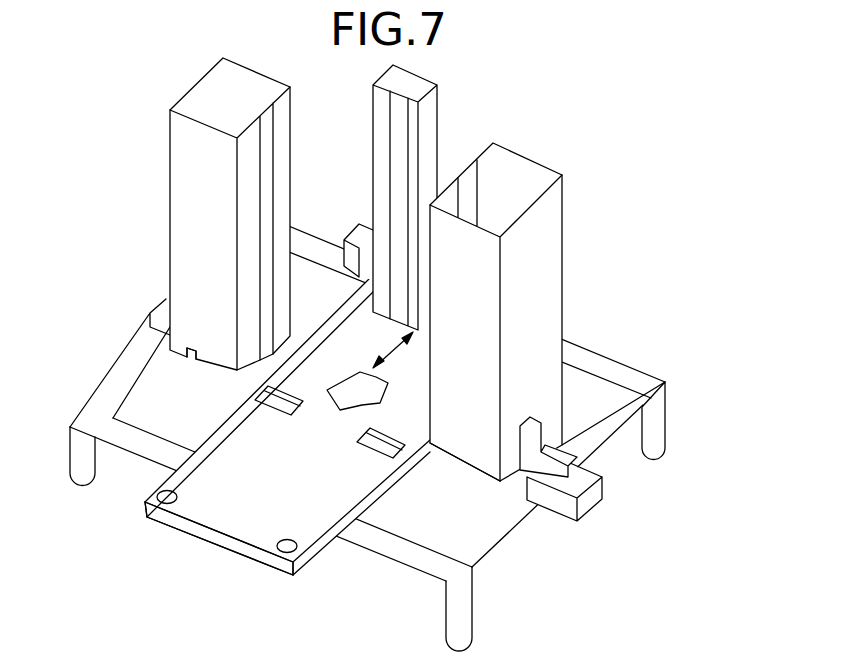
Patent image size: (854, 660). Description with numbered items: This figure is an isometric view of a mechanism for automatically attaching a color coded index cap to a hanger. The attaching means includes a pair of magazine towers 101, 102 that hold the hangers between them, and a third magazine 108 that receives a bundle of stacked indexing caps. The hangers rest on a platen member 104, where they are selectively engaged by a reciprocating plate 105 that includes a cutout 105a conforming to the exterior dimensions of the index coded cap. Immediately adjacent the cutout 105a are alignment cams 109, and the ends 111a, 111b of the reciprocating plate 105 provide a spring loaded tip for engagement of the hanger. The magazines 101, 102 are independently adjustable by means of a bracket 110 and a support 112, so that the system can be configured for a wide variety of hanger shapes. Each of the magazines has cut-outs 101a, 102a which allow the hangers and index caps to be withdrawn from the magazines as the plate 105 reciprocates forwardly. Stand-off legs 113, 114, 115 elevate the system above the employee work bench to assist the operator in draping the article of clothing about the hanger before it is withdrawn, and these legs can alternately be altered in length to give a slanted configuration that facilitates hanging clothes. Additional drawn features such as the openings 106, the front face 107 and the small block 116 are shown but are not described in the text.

The magazine tower 101 is at (257, 73).
The cut-out 101a is at (212, 345).
The magazine tower 102 is at (515, 154).
The cut-out 102a is at (463, 460).
The platen member 104 is at (323, 516).
The reciprocating plate 105 is at (357, 347).
The cutout 105a is at (422, 348).
The mounting holes 106 is at (145, 508).
The front face of base plate 107 is at (222, 525).
The third magazine 108 is at (437, 103).
The alignment cams 109 is at (335, 393).
The bracket 110 is at (573, 463).
The end of reciprocating plate 111a is at (266, 402).
The end of reciprocating plate 111b is at (365, 445).
The support 112 is at (590, 502).
The stand-off leg 113 is at (83, 470).
The stand-off leg 114 is at (462, 626).
The stand-off leg 115 is at (656, 426).
The small block 116 is at (350, 237).